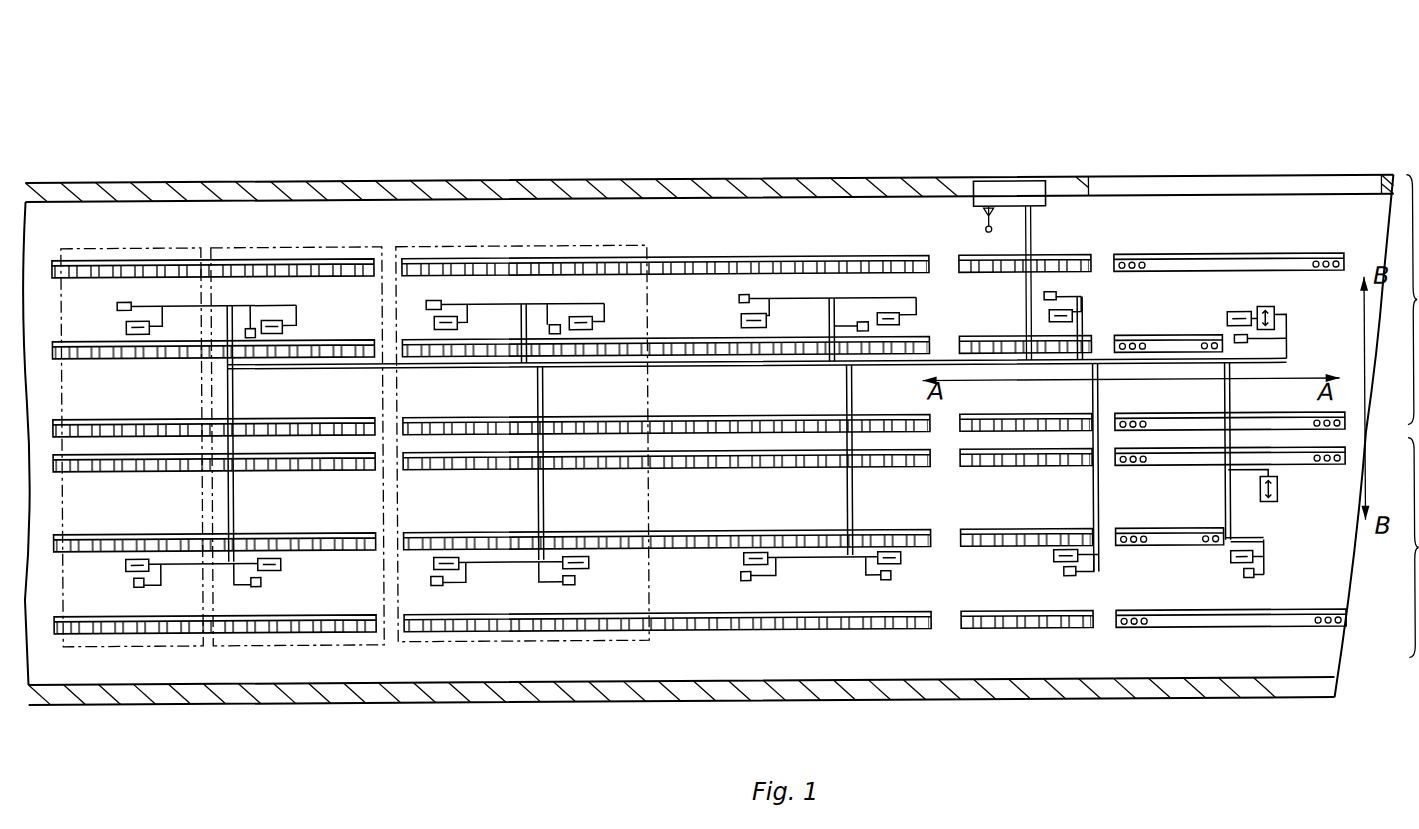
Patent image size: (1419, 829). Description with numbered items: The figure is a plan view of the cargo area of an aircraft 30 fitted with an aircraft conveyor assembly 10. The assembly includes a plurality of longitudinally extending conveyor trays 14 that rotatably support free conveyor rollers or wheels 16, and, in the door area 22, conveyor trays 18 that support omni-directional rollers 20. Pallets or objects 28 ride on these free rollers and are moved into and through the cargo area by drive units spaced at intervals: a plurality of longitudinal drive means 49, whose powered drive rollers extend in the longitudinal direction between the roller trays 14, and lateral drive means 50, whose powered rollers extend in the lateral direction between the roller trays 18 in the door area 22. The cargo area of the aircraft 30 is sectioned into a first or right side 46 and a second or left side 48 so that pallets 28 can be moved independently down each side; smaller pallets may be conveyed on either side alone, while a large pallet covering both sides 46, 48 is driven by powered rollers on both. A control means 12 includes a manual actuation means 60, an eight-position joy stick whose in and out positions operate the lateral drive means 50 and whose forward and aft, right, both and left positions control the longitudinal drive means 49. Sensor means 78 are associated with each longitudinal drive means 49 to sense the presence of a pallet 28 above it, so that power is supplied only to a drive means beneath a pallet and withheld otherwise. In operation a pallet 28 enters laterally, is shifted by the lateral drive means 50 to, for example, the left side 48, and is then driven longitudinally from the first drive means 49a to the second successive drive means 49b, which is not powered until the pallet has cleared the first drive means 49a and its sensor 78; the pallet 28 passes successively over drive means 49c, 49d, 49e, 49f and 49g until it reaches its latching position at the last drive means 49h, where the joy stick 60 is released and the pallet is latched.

The aircraft conveyor assembly 10 is at (645, 164).
The control means 12 is at (1012, 199).
The conveyor trays 14 is at (708, 257).
The free conveyor rollers 16 is at (353, 270).
The conveyor trays 18 is at (1190, 260).
The omni-directional rollers 20 is at (1330, 266).
The door area 22 is at (1262, 222).
The pallets 28 is at (570, 648).
The aircraft 30 is at (805, 188).
The first or right side 46 is at (1399, 300).
The second or left side 48 is at (1397, 548).
The longitudinal drive means 49 is at (283, 575).
The first drive means 49a is at (1230, 324).
The second drive means 49b is at (1075, 330).
The longitudinal drive means 49c is at (902, 330).
The longitudinal drive means 49d is at (742, 324).
The longitudinal drive means 49e is at (593, 330).
The longitudinal drive means 49f is at (455, 338).
The longitudinal drive means 49g is at (275, 337).
The last drive means 49h is at (135, 338).
The lateral drive means 50 is at (1272, 323).
The manual actuation means 60 is at (988, 223).
The sensor means 78 is at (745, 300).